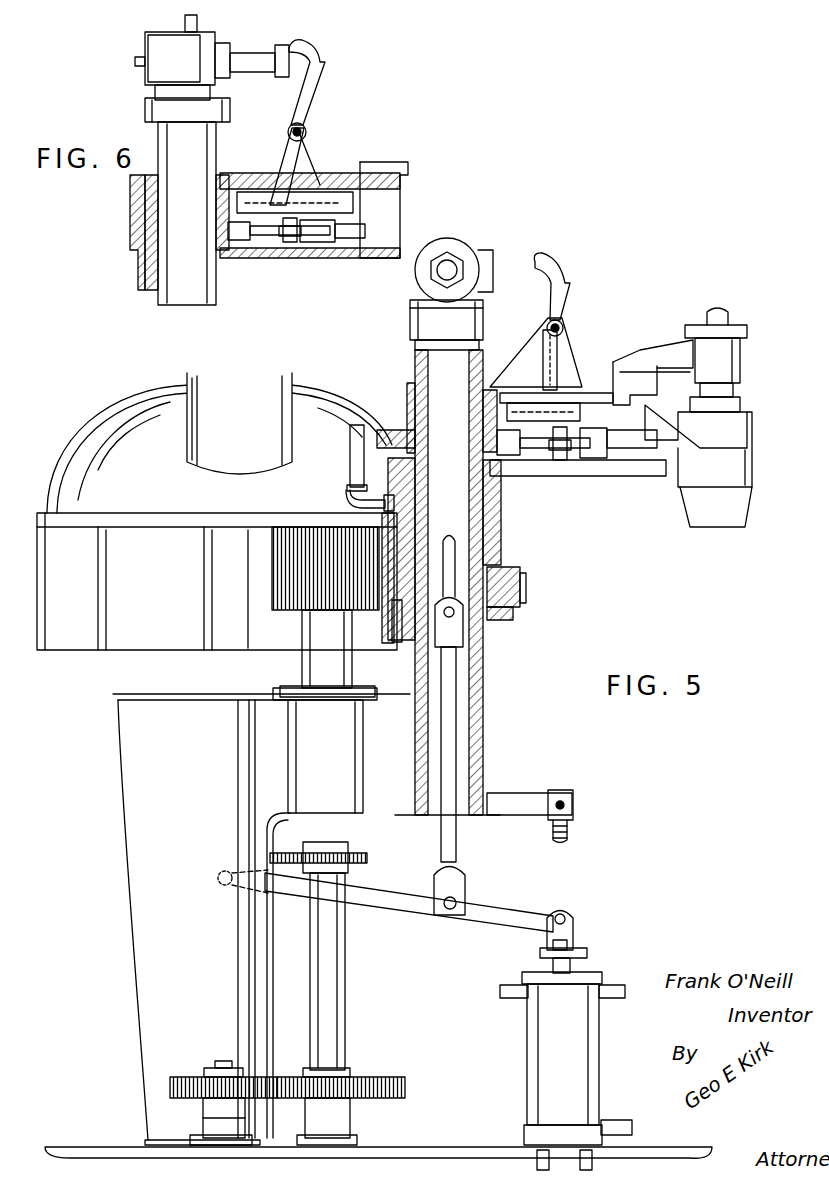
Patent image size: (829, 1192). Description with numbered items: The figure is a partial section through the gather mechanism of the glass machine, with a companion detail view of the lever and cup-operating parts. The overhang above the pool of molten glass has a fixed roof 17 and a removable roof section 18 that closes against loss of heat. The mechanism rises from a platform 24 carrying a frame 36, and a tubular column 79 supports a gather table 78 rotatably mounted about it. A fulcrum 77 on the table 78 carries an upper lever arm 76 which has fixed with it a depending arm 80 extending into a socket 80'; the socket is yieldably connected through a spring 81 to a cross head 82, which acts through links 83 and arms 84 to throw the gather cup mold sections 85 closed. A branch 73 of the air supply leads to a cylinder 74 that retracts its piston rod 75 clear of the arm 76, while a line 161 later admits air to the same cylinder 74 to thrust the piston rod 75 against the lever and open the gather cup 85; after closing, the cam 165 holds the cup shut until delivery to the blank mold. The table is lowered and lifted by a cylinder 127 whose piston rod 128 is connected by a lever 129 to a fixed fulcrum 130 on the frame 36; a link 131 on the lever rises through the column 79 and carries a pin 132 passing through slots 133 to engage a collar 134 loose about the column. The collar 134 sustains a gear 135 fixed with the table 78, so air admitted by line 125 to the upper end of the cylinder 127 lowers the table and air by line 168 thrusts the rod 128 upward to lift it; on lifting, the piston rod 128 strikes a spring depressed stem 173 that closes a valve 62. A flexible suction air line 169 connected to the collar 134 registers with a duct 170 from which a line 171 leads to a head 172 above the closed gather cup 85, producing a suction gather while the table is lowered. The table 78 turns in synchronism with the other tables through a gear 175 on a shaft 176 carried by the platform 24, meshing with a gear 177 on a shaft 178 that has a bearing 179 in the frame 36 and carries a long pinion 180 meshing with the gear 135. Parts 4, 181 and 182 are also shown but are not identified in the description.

In FIG. 5, the body casing 4 is at (75, 645).
In FIG. 5, the fixed roof 17 is at (127, 420).
In FIG. 5, the removable roof section 18 is at (250, 378).
In FIG. 5, the platform 24 is at (475, 1146).
In FIG. 5, the frame 36 is at (212, 694).
In FIG. 5, the valve 62 is at (575, 806).
In FIG. 6, the branch line 73 is at (198, 25).
In FIG. 5, the cylinder 74 is at (456, 250).
In FIG. 6, the cylinder 74 is at (135, 62).
In FIG. 5, the piston rod 75 is at (440, 275).
In FIG. 6, the piston rod 75 is at (256, 55).
In FIG. 5, the upper arm 76 is at (569, 284).
In FIG. 6, the upper arm 76 is at (317, 104).
In FIG. 5, the fulcrum 77 is at (563, 326).
In FIG. 6, the fulcrum 77 is at (307, 133).
In FIG. 5, the table 78 is at (515, 392).
In FIG. 6, the table 78 is at (330, 178).
In FIG. 5, the column 79 is at (500, 512).
In FIG. 6, the column 79 is at (200, 276).
In FIG. 5, the depending arm 80 is at (551, 354).
In FIG. 6, the depending arm 80 is at (277, 166).
In FIG. 6, the socket 80' is at (346, 147).
In FIG. 5, the spring 81 is at (546, 458).
In FIG. 6, the spring 81 is at (284, 242).
In FIG. 5, the cross head 82 is at (560, 460).
In FIG. 6, the cross head 82 is at (306, 245).
In FIG. 5, the links 83 is at (568, 435).
In FIG. 6, the links 83 is at (335, 243).
In FIG. 5, the arms 84 is at (610, 460).
In FIG. 6, the arms 84 is at (355, 225).
In FIG. 5, the gather cup mold sections 85 is at (690, 488).
In FIG. 5, the line 125 is at (613, 984).
In FIG. 5, the cylinder 127 is at (590, 1030).
In FIG. 5, the piston rod 128 is at (575, 936).
In FIG. 5, the lever 129 is at (478, 918).
In FIG. 5, the fixed fulcrum 130 is at (226, 883).
In FIG. 5, the link 131 is at (463, 860).
In FIG. 5, the pin 132 is at (520, 566).
In FIG. 5, the slots 133 is at (448, 532).
In FIG. 5, the collar 134 is at (514, 610).
In FIG. 5, the gear 135 is at (527, 590).
In FIG. 6, the line 161 is at (146, 50).
In FIG. 5, the cam 165 is at (397, 430).
In FIG. 6, the cam 165 is at (130, 216).
In FIG. 5, the line 168 is at (626, 1120).
In FIG. 5, the flexible suction air line 169 is at (376, 620).
In FIG. 5, the duct 170 is at (360, 500).
In FIG. 5, the line 171 is at (349, 440).
In FIG. 5, the head 172 is at (745, 360).
In FIG. 5, the spring depressed stem 173 is at (569, 836).
In FIG. 5, the gear 175 is at (176, 1100).
In FIG. 5, the shaft 176 is at (212, 1068).
In FIG. 5, the gear 177 is at (388, 1077).
In FIG. 5, the shaft 178 is at (346, 978).
In FIG. 5, the bearing 179 is at (366, 760).
In FIG. 5, the long pinion 180 is at (272, 588).
In FIG. 5, the gear 181 is at (366, 860).
In FIG. 5, the collar 182 is at (306, 850).